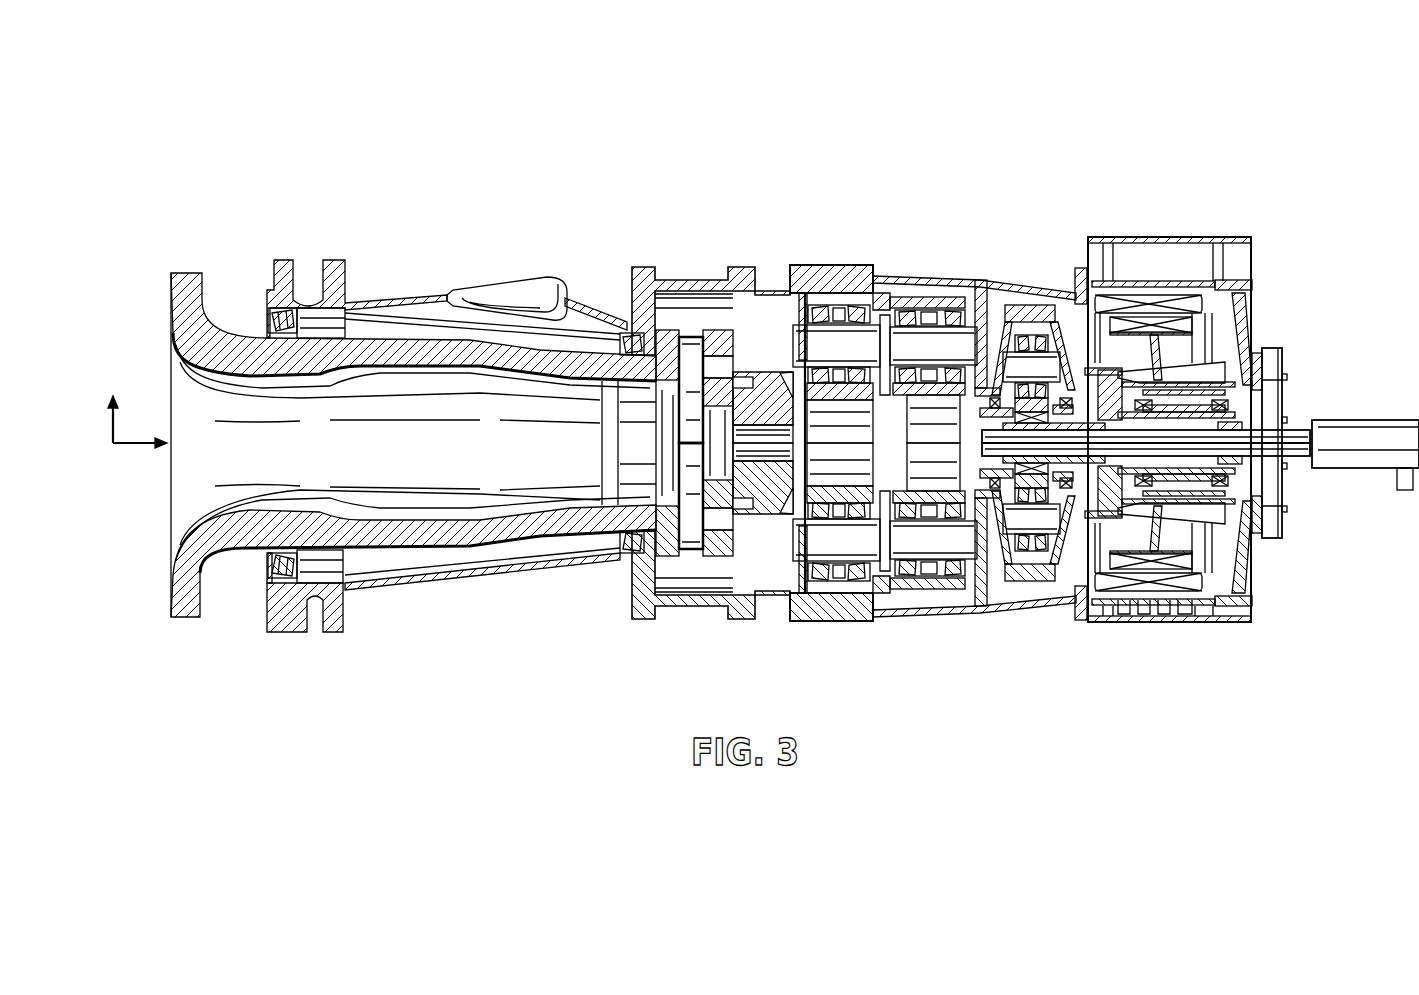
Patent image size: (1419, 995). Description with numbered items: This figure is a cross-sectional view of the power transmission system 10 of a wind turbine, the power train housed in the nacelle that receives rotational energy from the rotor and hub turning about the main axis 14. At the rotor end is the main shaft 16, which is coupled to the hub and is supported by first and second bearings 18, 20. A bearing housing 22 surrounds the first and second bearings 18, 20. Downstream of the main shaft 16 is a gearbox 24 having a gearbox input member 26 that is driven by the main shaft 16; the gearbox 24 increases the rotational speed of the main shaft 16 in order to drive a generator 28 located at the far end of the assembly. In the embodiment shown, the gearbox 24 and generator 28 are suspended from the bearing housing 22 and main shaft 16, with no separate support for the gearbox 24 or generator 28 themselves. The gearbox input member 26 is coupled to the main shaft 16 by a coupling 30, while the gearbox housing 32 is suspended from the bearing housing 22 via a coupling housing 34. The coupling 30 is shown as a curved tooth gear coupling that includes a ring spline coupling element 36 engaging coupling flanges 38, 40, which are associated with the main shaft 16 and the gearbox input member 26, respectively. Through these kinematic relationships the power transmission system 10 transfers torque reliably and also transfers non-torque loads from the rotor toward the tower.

The power transmission system 10 is at (755, 351).
The main axis 14 is at (127, 448).
The main shaft 16 is at (186, 271).
The first bearing 18 is at (275, 318).
The second bearing 20 is at (621, 330).
The bearing housing 22 is at (392, 300).
The gearbox 24 is at (835, 268).
The gearbox input member 26 is at (756, 345).
The generator 28 is at (1163, 238).
The coupling 30 is at (707, 434).
The gearbox housing 32 is at (922, 277).
The coupling housing 34 is at (684, 280).
The ring spline coupling element 36 is at (663, 556).
The coupling flange 38 is at (662, 340).
The coupling flange 40 is at (720, 553).